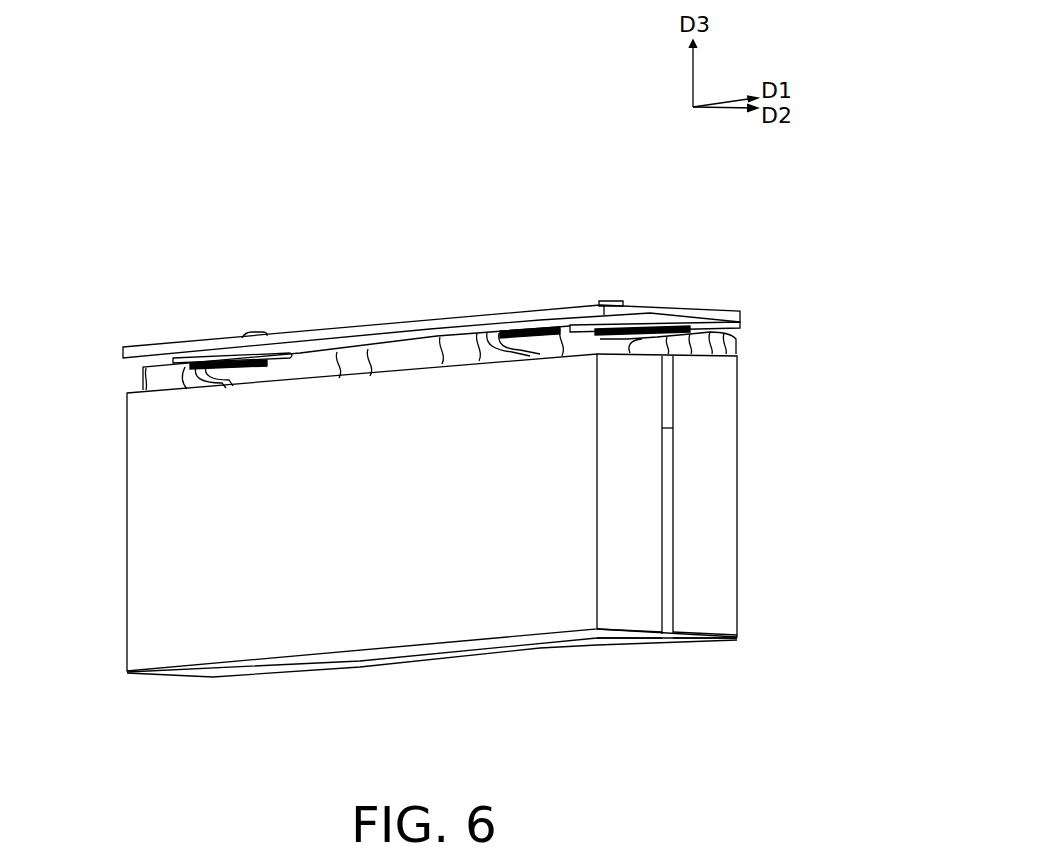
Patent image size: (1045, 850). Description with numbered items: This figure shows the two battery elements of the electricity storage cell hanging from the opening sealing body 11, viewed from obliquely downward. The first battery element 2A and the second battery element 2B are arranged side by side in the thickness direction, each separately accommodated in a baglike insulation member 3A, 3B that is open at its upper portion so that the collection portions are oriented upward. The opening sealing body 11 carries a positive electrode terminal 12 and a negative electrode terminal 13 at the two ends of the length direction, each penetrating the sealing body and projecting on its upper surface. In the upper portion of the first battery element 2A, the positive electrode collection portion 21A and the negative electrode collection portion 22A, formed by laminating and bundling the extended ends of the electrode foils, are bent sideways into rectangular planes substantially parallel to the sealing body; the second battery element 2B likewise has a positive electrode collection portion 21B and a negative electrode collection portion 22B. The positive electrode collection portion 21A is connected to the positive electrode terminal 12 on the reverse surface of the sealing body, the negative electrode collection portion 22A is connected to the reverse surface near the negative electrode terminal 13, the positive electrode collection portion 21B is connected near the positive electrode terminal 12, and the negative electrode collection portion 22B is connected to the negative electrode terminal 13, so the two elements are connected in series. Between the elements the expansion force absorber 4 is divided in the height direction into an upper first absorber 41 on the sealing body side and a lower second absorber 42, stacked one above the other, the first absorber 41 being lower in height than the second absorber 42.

The opening sealing body 11 is at (547, 316).
The positive electrode terminal 12 is at (611, 300).
The negative electrode terminal 13 is at (251, 331).
The positive electrode collection portion 21A is at (737, 343).
The positive electrode collection portion 21B is at (458, 340).
The negative electrode collection portion 22A is at (313, 352).
The negative electrode collection portion 22B is at (143, 369).
The first battery element 2A is at (762, 518).
The second battery element 2B is at (113, 585).
The insulation member 3A is at (702, 618).
The insulation member 3B is at (635, 618).
The expansion force absorber 4 is at (747, 495).
The first absorber 41 is at (668, 383).
The second absorber 42 is at (668, 467).